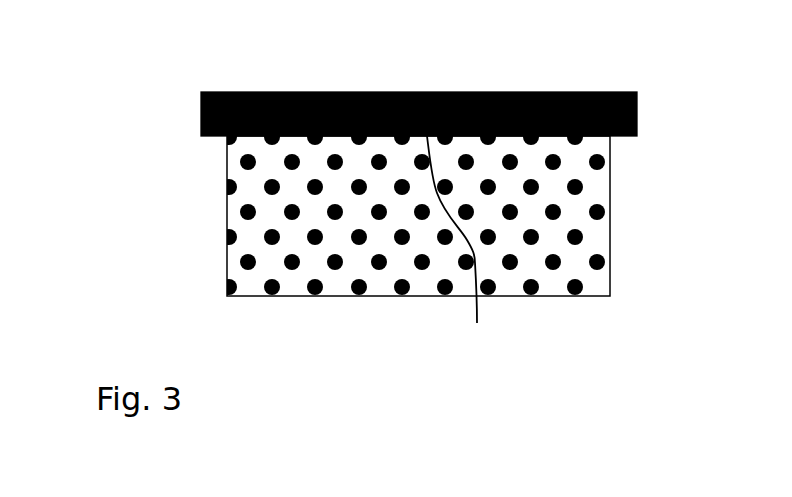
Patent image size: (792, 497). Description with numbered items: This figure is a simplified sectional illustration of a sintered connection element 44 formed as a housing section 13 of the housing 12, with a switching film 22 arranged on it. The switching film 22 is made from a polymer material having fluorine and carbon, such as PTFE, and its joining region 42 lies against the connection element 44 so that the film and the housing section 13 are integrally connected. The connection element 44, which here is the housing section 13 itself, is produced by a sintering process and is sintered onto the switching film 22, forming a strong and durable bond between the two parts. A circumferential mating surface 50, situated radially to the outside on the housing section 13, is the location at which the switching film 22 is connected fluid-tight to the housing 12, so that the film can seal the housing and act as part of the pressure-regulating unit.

The housing 12 is at (439, 212).
The first housing section 13 is at (439, 212).
The switching film 22 is at (492, 92).
The joining region 42 is at (404, 87).
The connection element 44 is at (243, 223).
The mating surface 50 is at (461, 246).